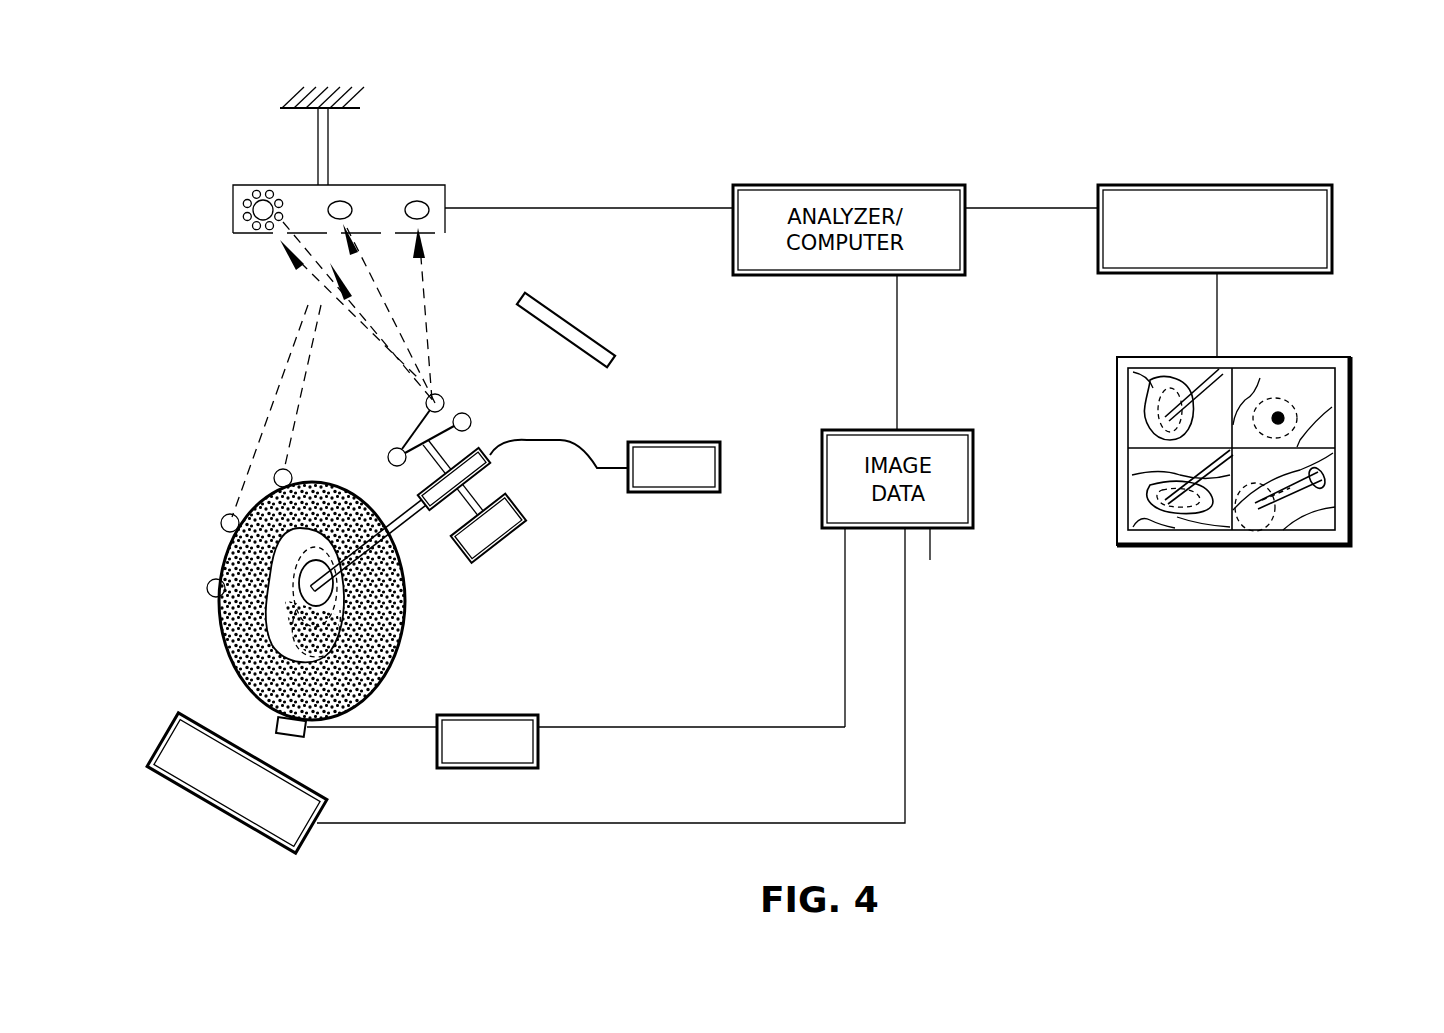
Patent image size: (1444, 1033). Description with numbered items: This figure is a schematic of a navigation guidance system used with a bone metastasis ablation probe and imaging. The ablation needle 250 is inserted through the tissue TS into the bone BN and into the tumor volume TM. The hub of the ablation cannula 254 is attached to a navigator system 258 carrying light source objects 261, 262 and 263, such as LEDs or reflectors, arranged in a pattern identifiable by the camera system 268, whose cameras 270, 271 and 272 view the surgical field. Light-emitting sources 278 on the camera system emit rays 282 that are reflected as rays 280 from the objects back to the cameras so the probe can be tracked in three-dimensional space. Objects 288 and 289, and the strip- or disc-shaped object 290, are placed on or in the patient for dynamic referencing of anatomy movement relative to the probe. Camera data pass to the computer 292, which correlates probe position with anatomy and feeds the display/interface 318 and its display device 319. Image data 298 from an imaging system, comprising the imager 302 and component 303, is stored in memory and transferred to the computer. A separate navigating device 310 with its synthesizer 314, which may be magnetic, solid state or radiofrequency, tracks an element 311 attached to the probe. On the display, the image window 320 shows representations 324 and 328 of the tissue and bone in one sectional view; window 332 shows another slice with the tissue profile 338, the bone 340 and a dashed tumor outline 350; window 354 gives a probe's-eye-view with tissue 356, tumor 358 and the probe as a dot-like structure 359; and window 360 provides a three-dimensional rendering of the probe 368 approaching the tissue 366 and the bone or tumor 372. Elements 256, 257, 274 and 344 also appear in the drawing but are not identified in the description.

The ablation needle 250 is at (397, 510).
The ablation cannula 254 is at (488, 462).
The probe controller 256 is at (680, 492).
The target region boundary 257 is at (287, 620).
The navigator system 258 is at (458, 437).
The light source object 261 is at (441, 392).
The light source object 262 is at (398, 446).
The light source object 263 is at (450, 428).
The camera system 268 is at (450, 222).
The camera 270 is at (268, 198).
The camera 271 is at (345, 200).
The camera 272 is at (418, 200).
The support structure 274 is at (295, 105).
The light-emitting source 278 is at (240, 196).
The reflected rays 280 is at (312, 270).
The emitted rays 282 is at (332, 267).
The tracked object 288 is at (222, 514).
The tracked object 289 is at (210, 582).
The light-emitting or light-reflecting object 290 is at (332, 480).
The computer 292 is at (920, 277).
The image data memory 298 is at (930, 560).
The imager 302 is at (308, 840).
The imaging system component 303 is at (597, 340).
The navigating device 310 is at (308, 733).
The tracked element 311 is at (510, 533).
The synthesizer 314 is at (500, 715).
The display/interface 318 is at (1332, 227).
The display device 319 is at (1257, 352).
The image window 320 is at (1157, 367).
The tissue representation 324 is at (1193, 387).
The bone representation 328 is at (1145, 408).
The display window 332 is at (1127, 463).
The tissue profile representation 338 is at (1132, 545).
The bone representation 340 is at (1177, 513).
The target image 344 is at (1150, 493).
The tumor outline 350 is at (1203, 517).
The probe's-eye-view window 354 is at (1317, 365).
The tissue representation 356 is at (1320, 393).
The tumor representation 358 is at (1298, 412).
The dot-like probe representation 359 is at (1287, 422).
The three-dimensional rendering window 360 is at (1337, 513).
The tissue rendering 366 is at (1295, 517).
The probe rendering 368 is at (1280, 502).
The bone or tumor rendering 372 is at (1258, 527).
The tissue TS is at (218, 617).
The tumor volume TM is at (343, 590).
The bone BN is at (363, 617).